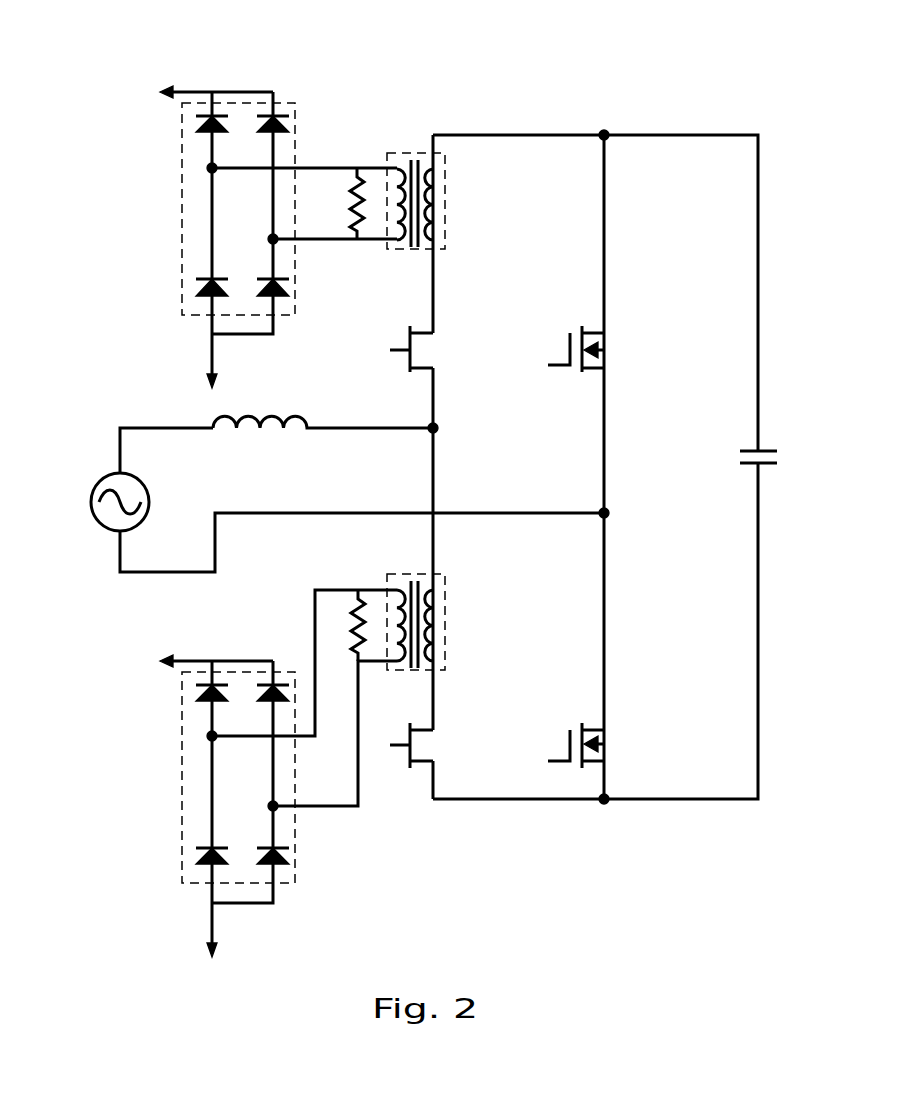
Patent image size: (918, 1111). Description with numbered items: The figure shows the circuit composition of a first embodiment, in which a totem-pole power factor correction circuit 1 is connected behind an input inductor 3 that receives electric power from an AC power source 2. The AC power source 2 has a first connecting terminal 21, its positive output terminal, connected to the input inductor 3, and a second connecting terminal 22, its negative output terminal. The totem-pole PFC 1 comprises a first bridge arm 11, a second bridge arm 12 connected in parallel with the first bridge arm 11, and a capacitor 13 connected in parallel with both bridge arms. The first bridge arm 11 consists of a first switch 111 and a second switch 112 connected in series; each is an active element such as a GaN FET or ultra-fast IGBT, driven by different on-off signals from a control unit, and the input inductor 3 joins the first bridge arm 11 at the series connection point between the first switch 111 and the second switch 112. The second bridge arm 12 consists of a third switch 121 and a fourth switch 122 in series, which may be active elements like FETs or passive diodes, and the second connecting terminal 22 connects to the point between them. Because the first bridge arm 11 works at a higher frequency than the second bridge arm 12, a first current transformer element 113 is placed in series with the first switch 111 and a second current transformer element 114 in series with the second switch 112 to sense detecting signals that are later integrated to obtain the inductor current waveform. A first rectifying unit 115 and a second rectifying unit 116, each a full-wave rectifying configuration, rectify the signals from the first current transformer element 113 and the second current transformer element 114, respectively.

The totem-pole power factor correction circuit 1 is at (583, 106).
The AC power source 2 is at (97, 487).
The first connecting terminal 21 is at (118, 452).
The second connecting terminal 22 is at (118, 548).
The input inductor 3 is at (292, 415).
The first bridge arm 11 is at (512, 472).
The first switch 111 is at (432, 350).
The second switch 112 is at (432, 745).
The first current transformer element 113 is at (410, 153).
The second current transformer element 114 is at (410, 574).
The first rectifying unit 115 is at (182, 190).
The second rectifying unit 116 is at (182, 779).
The second bridge arm 12 is at (687, 460).
The third switch 121 is at (607, 339).
The fourth switch 122 is at (608, 737).
The capacitor 13 is at (765, 450).